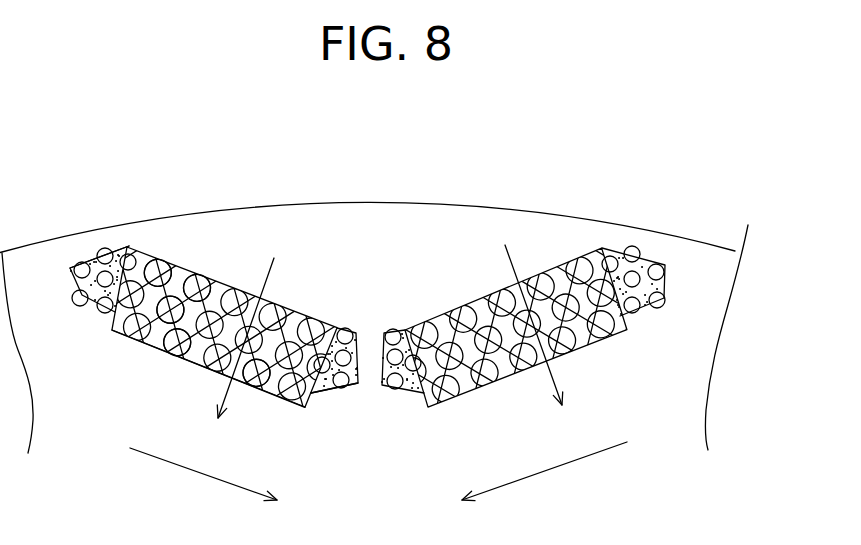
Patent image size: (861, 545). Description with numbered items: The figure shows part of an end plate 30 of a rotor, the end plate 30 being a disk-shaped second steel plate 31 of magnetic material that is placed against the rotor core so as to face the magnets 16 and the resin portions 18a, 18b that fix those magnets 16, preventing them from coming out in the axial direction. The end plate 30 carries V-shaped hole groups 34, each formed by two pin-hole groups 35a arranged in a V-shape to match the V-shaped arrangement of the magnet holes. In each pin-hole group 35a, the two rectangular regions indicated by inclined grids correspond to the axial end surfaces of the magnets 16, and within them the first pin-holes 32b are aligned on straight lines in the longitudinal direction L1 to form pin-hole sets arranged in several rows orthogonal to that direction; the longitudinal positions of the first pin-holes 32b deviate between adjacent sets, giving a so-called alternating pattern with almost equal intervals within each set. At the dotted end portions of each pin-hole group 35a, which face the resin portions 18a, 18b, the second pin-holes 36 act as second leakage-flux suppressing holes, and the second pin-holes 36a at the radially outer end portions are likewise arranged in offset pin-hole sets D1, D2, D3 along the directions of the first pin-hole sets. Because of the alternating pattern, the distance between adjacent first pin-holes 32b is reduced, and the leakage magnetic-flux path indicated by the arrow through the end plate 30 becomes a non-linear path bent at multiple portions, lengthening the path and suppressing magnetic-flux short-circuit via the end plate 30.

The magnet 16 is at (367, 334).
The resin portion 18a is at (357, 386).
The resin portion 18b is at (90, 258).
The end plate 30 is at (655, 368).
The second steel plate 31 is at (698, 313).
The first pin-hole 32b is at (157, 268).
The V-shaped hole group 34 is at (197, 365).
The pin-hole group 35a is at (256, 375).
The second pin-hole 36 is at (365, 270).
The second pin-hole 36a is at (130, 260).
The pin-hole set D1 is at (108, 250).
The pin-hole set D2 is at (80, 262).
The pin-hole set D3 is at (98, 306).
The longitudinal direction L1 is at (175, 465).